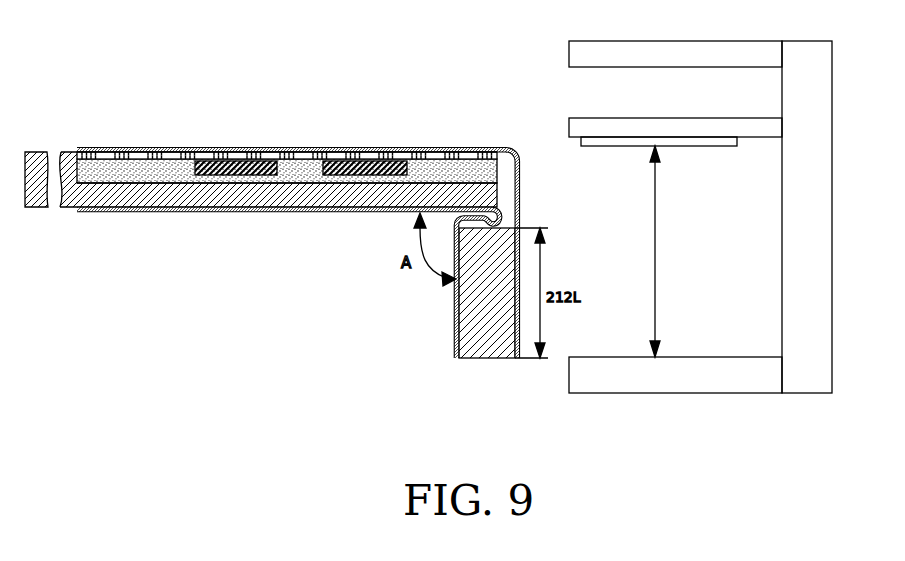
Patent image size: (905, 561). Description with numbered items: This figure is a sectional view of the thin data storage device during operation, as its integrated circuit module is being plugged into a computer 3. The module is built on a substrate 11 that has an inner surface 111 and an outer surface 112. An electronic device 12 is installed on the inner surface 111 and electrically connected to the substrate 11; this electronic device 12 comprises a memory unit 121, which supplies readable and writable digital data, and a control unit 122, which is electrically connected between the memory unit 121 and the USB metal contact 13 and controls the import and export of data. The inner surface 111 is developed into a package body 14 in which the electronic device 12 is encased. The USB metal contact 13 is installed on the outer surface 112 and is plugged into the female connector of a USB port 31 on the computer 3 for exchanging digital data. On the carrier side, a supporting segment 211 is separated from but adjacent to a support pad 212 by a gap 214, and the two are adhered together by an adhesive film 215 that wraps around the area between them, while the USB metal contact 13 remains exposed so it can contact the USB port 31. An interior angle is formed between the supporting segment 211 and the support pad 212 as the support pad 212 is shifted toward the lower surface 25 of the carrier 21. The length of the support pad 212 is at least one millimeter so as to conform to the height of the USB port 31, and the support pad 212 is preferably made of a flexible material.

The computer 3 is at (496, 33).
The USB port 31 is at (547, 83).
The substrate 11 is at (287, 129).
The inner surface 111 is at (458, 156).
The outer surface 112 is at (427, 155).
The electronic device 12 is at (312, 115).
The memory unit 121 is at (259, 166).
The control unit 122 is at (334, 166).
The USB metal contact 13 is at (287, 139).
The package body 14 is at (149, 152).
The housing 21 is at (40, 115).
The supporting segment 211 is at (152, 197).
The support pad 212 is at (468, 330).
The gap 214 is at (505, 165).
The adhesive film 215 is at (103, 147).
The lower surface 25 is at (64, 209).